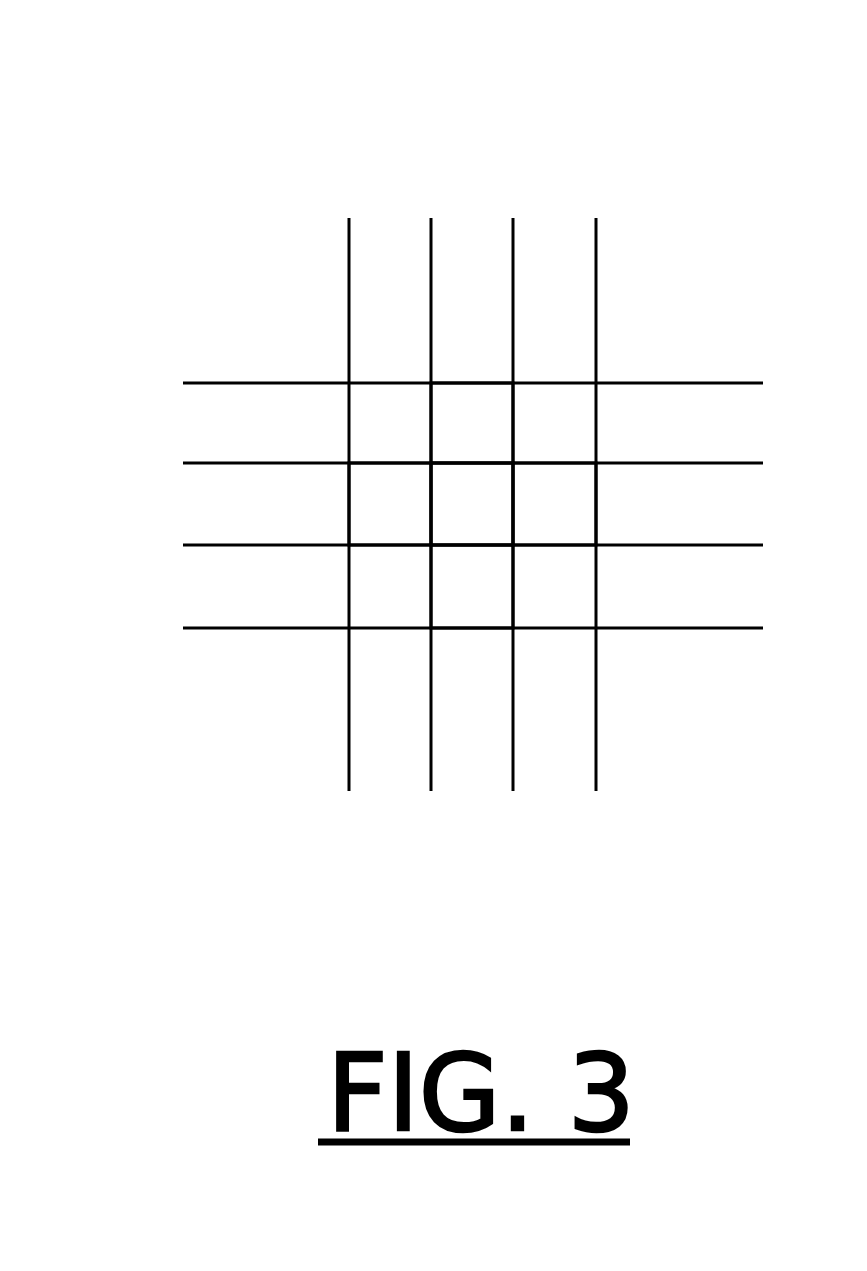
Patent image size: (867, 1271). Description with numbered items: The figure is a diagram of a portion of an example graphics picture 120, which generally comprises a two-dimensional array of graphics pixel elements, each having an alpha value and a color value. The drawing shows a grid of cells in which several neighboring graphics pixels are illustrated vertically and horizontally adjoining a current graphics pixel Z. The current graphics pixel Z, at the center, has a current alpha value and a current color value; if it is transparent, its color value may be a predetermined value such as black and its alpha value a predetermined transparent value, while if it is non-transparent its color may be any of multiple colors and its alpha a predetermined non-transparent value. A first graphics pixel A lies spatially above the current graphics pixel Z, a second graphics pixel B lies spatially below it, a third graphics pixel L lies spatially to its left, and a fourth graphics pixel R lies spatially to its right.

The graphics picture 120 is at (228, 75).
The first graphics pixel A is at (472, 423).
The third graphics pixel L is at (390, 504).
The current graphics pixel Z is at (472, 504).
The fourth graphics pixel R is at (554, 504).
The second graphics pixel B is at (472, 586).